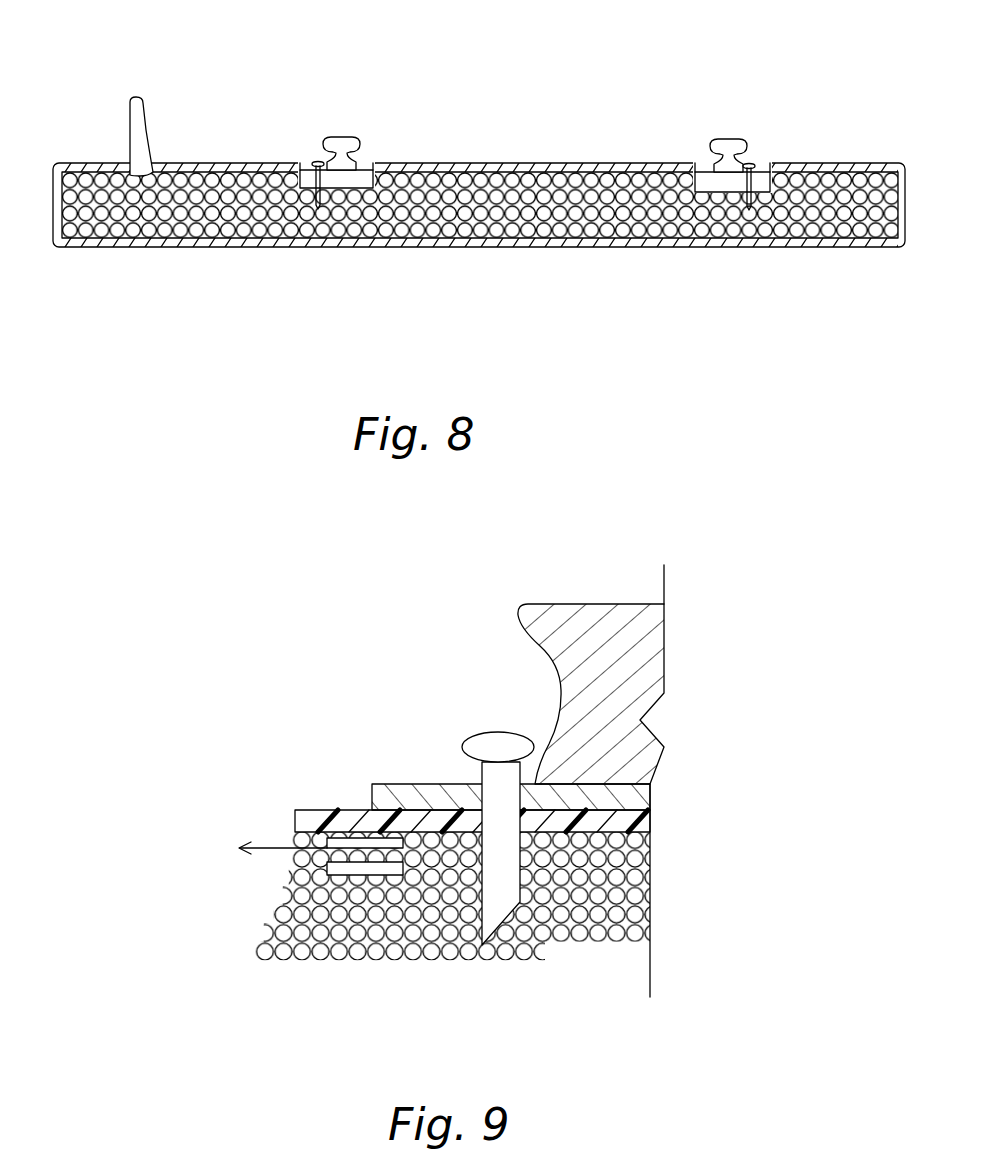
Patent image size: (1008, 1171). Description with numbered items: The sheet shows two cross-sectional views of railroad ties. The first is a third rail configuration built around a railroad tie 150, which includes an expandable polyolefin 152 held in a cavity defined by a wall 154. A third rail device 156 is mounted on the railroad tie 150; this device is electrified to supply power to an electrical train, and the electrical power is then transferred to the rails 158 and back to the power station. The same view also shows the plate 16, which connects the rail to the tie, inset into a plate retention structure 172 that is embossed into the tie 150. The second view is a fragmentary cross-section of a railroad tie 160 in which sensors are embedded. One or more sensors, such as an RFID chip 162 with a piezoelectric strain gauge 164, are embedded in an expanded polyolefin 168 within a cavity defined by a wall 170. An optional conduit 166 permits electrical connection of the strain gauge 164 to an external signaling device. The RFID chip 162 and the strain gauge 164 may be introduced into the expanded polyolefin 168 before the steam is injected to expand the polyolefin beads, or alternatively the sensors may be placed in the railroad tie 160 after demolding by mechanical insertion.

In FIG. 8, the plate 16 is at (373, 165).
In FIG. 8, the railroad tie 150 is at (237, 248).
In FIG. 8, the expandable polyolefin 152 is at (378, 242).
In FIG. 8, the wall 154 is at (478, 238).
In FIG. 8, the third rail device 156 is at (147, 130).
In FIG. 8, the rails 158 is at (722, 142).
In FIG. 9, the railroad tie 160 is at (358, 944).
In FIG. 9, the RFID chip 162 is at (340, 872).
In FIG. 9, the piezoelectric strain gauge 164 is at (327, 852).
In FIG. 9, the conduit 166 is at (258, 847).
In FIG. 9, the expanded polyolefin 168 is at (435, 935).
In FIG. 9, the wall 170 is at (353, 818).
In FIG. 8, the plate retention structure 172 is at (305, 165).